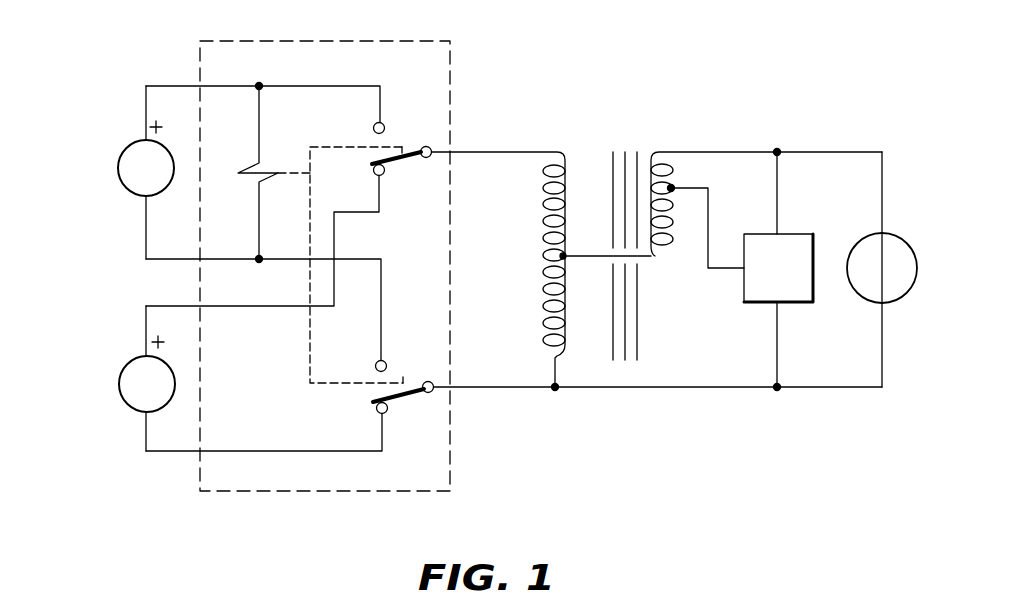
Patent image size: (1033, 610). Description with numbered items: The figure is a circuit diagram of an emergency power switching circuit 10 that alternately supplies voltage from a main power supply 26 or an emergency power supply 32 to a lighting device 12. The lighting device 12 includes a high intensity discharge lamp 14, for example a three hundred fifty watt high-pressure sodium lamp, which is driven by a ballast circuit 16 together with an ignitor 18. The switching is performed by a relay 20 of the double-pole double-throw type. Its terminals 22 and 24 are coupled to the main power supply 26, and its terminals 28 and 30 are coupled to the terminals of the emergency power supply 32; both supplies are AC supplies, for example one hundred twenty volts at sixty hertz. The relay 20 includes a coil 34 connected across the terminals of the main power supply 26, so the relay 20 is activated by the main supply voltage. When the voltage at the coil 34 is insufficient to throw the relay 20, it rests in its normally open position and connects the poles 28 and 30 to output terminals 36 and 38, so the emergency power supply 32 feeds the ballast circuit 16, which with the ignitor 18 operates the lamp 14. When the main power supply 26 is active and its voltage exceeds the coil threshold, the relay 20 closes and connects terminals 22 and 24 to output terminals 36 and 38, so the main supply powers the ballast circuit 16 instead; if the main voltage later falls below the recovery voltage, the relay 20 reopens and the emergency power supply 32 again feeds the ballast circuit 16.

The circuit 10 is at (373, 260).
The lighting device 12 is at (765, 198).
The high intensity discharge lamp 14 is at (872, 238).
The ballast circuit 16 is at (585, 357).
The ignitor 18 is at (748, 305).
The relay 20 is at (466, 471).
The terminal 22 is at (385, 122).
The terminal 24 is at (387, 362).
The main power supply 26 is at (157, 183).
The terminal 28 is at (385, 176).
The terminal 30 is at (388, 414).
The emergency power supply 32 is at (135, 405).
The coil 34 is at (266, 165).
The output terminal 36 is at (436, 139).
The output terminal 38 is at (438, 374).